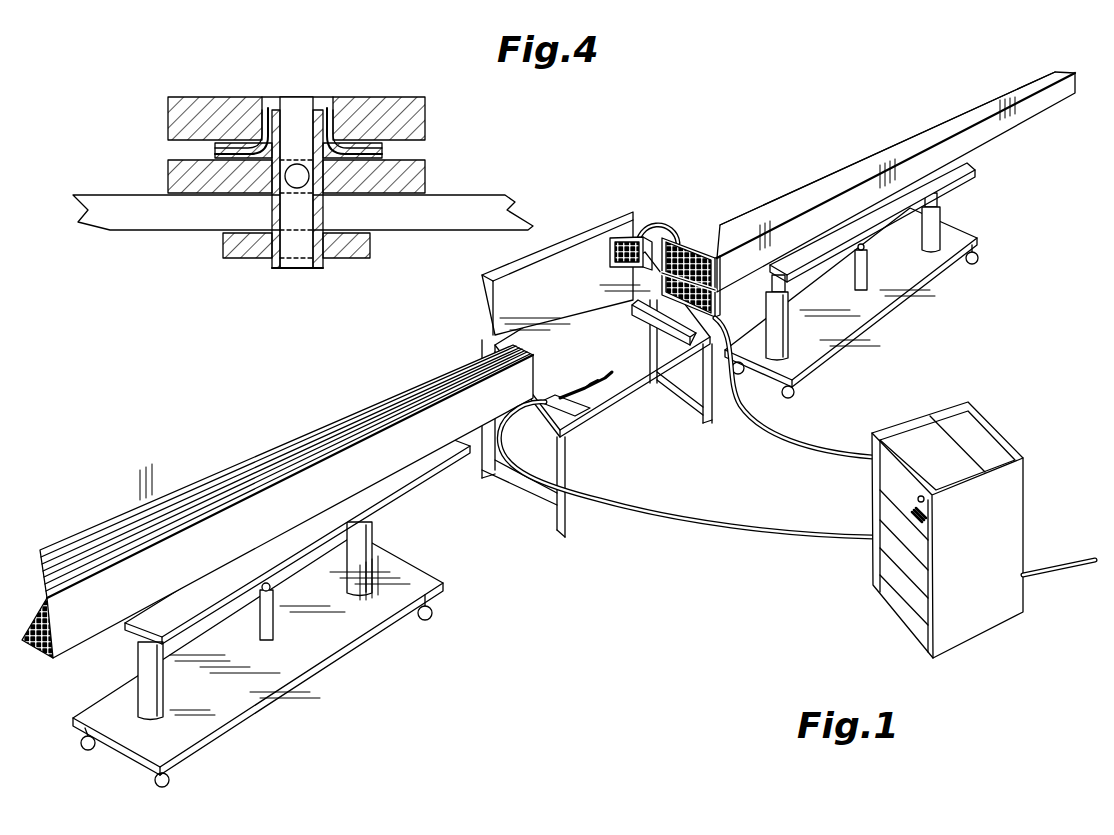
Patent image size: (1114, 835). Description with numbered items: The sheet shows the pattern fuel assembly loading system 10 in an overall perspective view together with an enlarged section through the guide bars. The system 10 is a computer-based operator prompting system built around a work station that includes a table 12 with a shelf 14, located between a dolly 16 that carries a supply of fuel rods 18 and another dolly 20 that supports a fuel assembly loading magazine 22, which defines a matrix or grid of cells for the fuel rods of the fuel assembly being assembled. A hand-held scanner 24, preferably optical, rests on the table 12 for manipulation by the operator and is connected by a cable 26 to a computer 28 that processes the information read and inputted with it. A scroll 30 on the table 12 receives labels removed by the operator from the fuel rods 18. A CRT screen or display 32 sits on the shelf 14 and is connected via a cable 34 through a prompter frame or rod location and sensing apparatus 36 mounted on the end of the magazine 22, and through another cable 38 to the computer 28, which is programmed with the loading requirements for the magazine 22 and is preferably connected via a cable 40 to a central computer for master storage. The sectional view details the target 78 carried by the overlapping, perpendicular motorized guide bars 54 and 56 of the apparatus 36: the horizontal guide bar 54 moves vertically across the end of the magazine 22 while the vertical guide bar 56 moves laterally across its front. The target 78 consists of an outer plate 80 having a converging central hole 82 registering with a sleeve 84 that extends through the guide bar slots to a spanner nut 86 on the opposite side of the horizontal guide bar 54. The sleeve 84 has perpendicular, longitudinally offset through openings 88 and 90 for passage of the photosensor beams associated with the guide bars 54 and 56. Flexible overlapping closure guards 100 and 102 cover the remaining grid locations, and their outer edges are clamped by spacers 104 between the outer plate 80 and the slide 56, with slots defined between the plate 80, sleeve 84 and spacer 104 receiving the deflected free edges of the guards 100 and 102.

In FIG. 1, the pattern fuel assembly loading system 10 is at (388, 360).
In FIG. 1, the table 12 is at (622, 385).
In FIG. 1, the shelf 14 is at (500, 312).
In FIG. 1, the dolly 16 is at (405, 578).
In FIG. 1, the fuel rods 18 is at (275, 455).
In FIG. 1, the dolly 20 is at (918, 268).
In FIG. 1, the fuel assembly loading magazine 22 is at (870, 163).
In FIG. 1, the hand-held scanner 24 is at (556, 396).
In FIG. 1, the cable 26 is at (663, 512).
In FIG. 1, the computer 28 is at (1015, 470).
In FIG. 1, the scroll 30 is at (657, 322).
In FIG. 1, the CRT screen or display 32 is at (620, 238).
In FIG. 1, the cable 34 is at (652, 222).
In FIG. 1, the rod location and sensing apparatus 36 is at (692, 232).
In FIG. 1, the cable 38 is at (803, 443).
In FIG. 1, the cable 40 is at (1066, 560).
In FIG. 4, the horizontal guide bar 54 is at (482, 206).
In FIG. 4, the vertical guide bar 56 is at (417, 181).
In FIG. 4, the target 78 is at (152, 92).
In FIG. 4, the outer plate 80 is at (399, 118).
In FIG. 4, the converging central hole 82 is at (290, 96).
In FIG. 4, the sleeve 84 is at (310, 100).
In FIG. 4, the spanner nut 86 is at (244, 253).
In FIG. 4, the through opening 88 is at (274, 196).
In FIG. 4, the through opening 90 is at (323, 204).
In FIG. 4, the closure guard 100 is at (264, 130).
In FIG. 4, the closure guard 102 is at (344, 100).
In FIG. 4, the spacers 104 is at (222, 150).